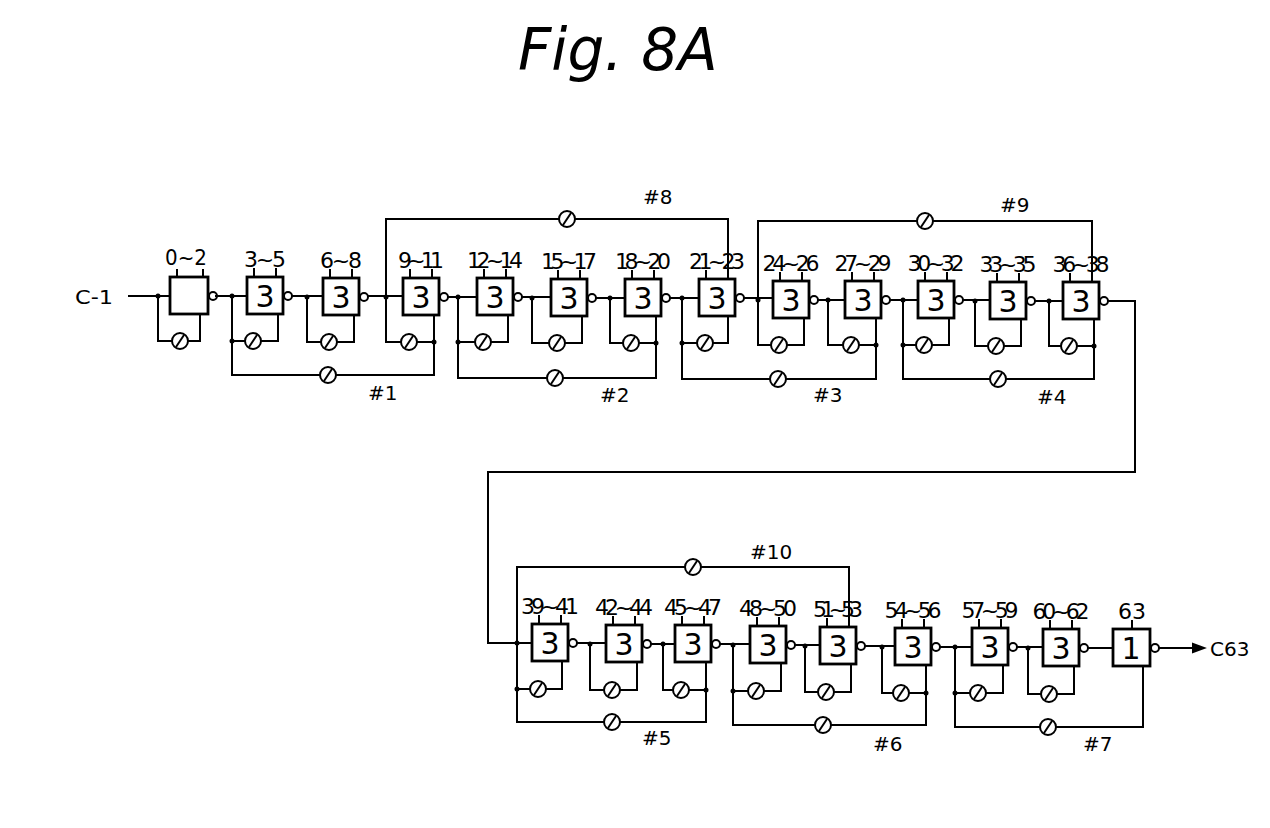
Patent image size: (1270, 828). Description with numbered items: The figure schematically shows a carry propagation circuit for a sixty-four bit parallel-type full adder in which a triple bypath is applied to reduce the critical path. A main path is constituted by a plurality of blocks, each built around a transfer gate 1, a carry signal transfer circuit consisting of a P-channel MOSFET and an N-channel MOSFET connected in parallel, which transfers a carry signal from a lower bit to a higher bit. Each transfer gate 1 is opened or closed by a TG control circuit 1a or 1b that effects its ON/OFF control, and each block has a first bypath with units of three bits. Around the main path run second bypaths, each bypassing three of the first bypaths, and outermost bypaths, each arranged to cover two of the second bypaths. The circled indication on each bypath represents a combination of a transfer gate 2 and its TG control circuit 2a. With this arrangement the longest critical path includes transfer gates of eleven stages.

The transfer gate 1 is at (170, 308).
The TG control circuit 1a is at (153, 272).
The TG control circuit 1b is at (210, 227).
The transfer gate 2 is at (180, 349).
The TG control circuit 2a is at (328, 383).